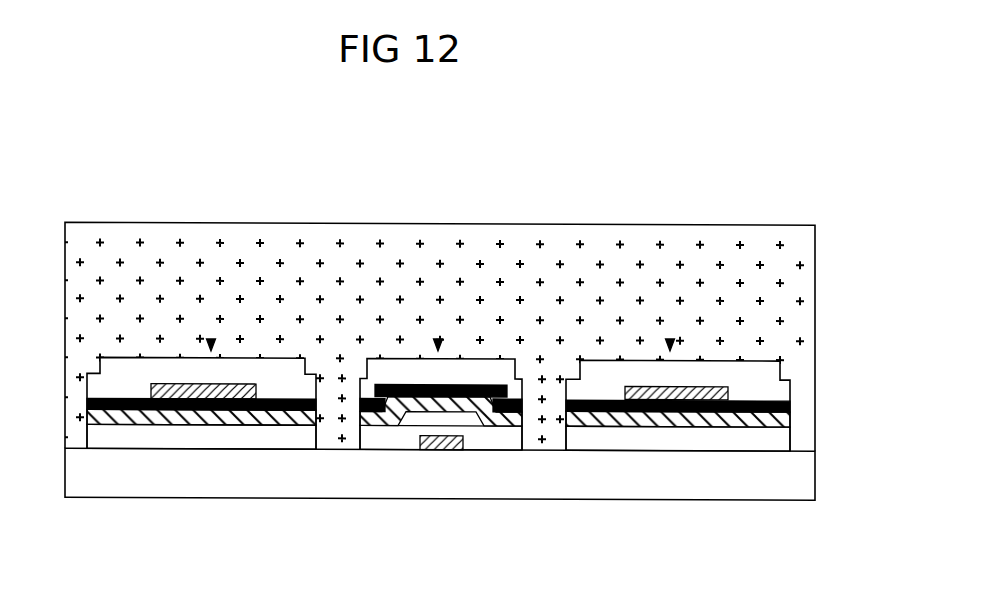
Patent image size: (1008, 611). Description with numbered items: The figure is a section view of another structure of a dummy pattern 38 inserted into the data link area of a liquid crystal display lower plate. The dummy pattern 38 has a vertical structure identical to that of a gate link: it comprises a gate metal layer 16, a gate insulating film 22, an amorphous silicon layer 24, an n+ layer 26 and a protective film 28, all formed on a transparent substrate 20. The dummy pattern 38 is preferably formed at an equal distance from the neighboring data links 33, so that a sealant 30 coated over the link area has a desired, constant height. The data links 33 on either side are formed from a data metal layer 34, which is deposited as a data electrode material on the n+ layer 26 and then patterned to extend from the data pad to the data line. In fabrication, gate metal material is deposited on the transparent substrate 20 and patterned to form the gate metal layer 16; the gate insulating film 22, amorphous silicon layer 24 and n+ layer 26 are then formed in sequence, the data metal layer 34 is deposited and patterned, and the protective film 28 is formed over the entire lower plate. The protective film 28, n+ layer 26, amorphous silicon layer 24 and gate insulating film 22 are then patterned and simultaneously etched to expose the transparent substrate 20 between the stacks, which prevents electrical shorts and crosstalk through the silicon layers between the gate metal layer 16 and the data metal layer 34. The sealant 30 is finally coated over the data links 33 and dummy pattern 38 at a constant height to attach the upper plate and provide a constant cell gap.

The gate metal layer 16 is at (442, 449).
The transparent substrate 20 is at (790, 487).
The gate insulating film 22 is at (787, 438).
The amorphous silicon layer 24 is at (773, 427).
The n+ layer 26 is at (790, 403).
The protective film 28 is at (790, 377).
The sealant 30 is at (803, 270).
The data link 33 is at (212, 345).
The data metal layer 34 is at (683, 413).
The dummy pattern 38 is at (438, 347).